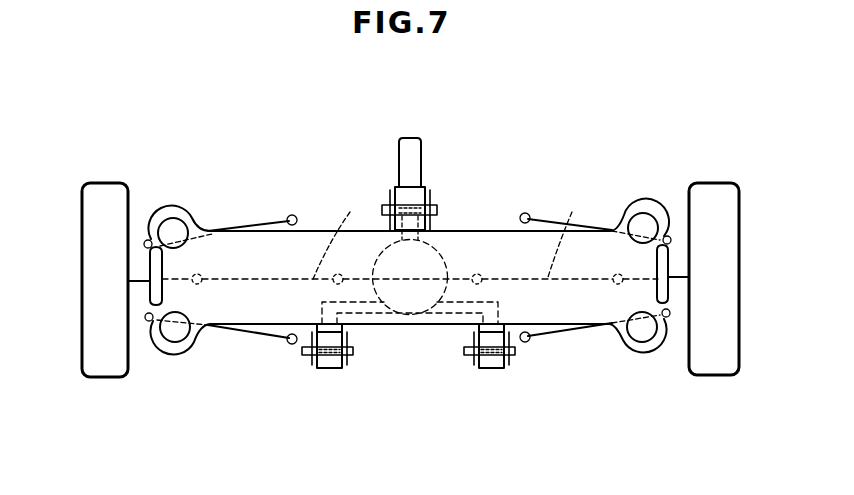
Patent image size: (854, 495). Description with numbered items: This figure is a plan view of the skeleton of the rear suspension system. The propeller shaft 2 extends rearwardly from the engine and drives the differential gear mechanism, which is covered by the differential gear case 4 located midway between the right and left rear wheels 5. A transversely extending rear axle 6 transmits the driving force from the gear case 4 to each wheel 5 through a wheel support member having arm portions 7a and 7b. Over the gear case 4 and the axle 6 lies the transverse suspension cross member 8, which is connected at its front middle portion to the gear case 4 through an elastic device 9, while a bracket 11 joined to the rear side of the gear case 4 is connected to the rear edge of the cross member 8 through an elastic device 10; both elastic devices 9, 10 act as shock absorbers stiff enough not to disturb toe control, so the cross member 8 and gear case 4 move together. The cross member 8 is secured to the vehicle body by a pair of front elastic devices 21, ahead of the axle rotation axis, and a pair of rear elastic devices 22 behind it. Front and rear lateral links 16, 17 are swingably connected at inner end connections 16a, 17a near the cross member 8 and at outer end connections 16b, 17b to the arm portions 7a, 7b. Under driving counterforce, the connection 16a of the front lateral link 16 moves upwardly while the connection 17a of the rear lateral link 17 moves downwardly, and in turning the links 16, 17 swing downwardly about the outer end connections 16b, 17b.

The propeller shaft 2 is at (413, 152).
The differential gear case 4 is at (433, 255).
The rear wheel 5 is at (107, 372).
The rear axle 6 is at (451, 232).
The arm portion 7a is at (150, 268).
The arm portion 7b is at (150, 300).
The suspension cross member 8 is at (300, 248).
The elastic device 9 is at (415, 200).
The elastic device 10 is at (337, 362).
The bracket 11 is at (373, 303).
The front lateral link 16 is at (260, 222).
The inner end connection 16a is at (290, 215).
The outer end connection 16b is at (150, 240).
The rear lateral link 17 is at (238, 332).
The inner end connection 17a is at (291, 344).
The outer end connection 17b is at (150, 322).
The front elastic device 21 is at (177, 227).
The rear elastic device 22 is at (180, 330).